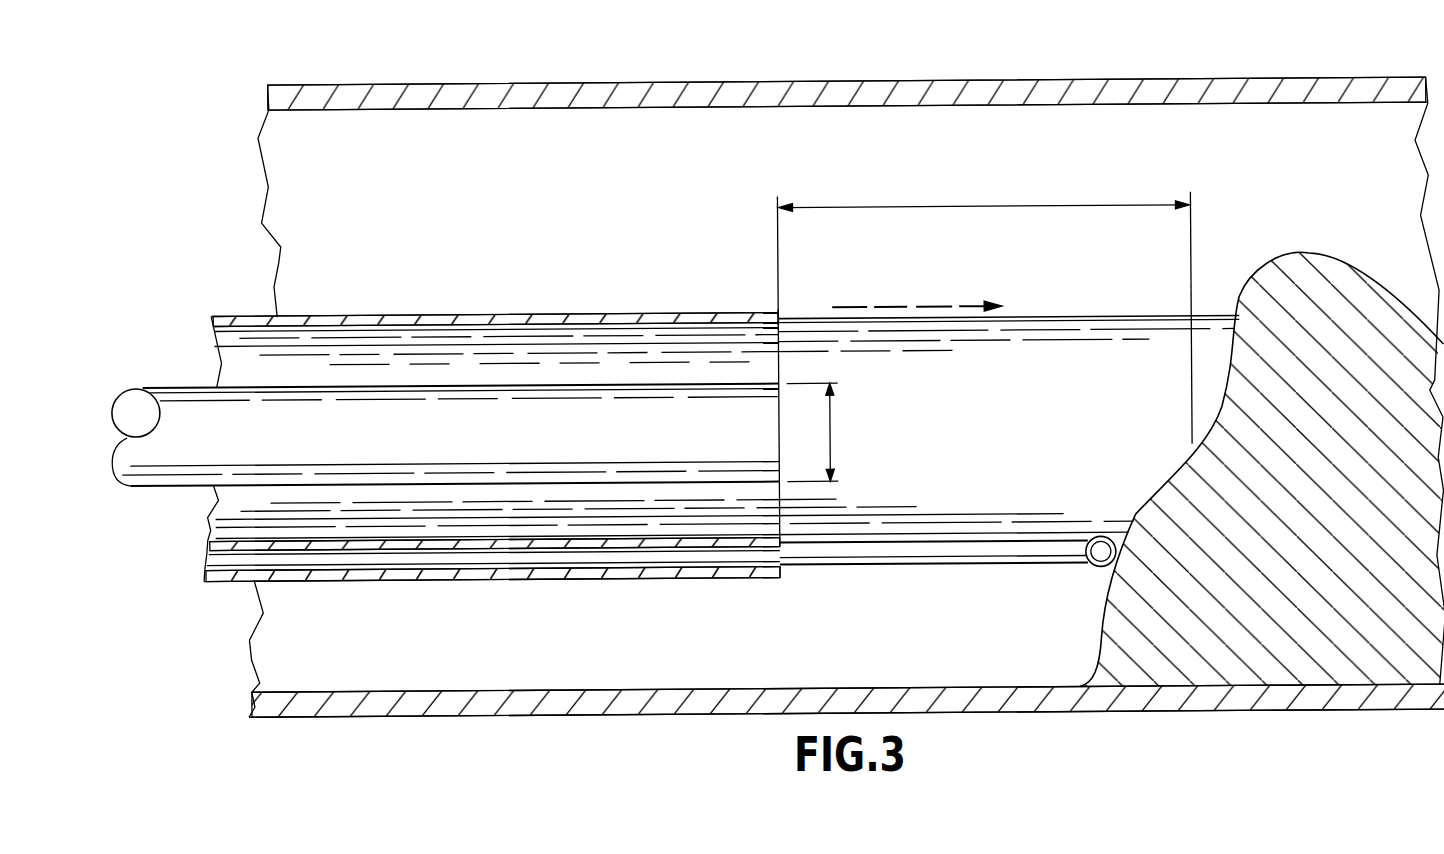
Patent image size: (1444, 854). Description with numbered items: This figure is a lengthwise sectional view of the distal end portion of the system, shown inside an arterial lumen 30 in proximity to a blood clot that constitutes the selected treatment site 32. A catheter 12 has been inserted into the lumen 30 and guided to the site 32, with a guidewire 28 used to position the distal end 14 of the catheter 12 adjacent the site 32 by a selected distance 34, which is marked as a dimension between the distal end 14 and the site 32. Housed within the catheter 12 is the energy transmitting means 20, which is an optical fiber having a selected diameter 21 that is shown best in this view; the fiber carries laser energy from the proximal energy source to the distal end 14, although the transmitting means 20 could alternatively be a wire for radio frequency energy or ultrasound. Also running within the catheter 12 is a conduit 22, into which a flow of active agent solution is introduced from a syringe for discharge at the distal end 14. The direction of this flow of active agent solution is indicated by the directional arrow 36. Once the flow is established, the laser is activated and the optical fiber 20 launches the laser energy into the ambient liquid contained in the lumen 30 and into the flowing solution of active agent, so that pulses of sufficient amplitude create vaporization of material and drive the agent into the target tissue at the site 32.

The catheter 12 is at (430, 313).
The distal end 14 is at (780, 314).
The energy transmitting means 20 is at (178, 384).
The selected diameter 21 is at (842, 430).
The conduit 22 is at (542, 355).
The guidewire 28 is at (934, 568).
The lumen 30 is at (495, 80).
The site 32 is at (1331, 272).
The selected distance 34 is at (944, 206).
The directional arrow 36 is at (933, 306).